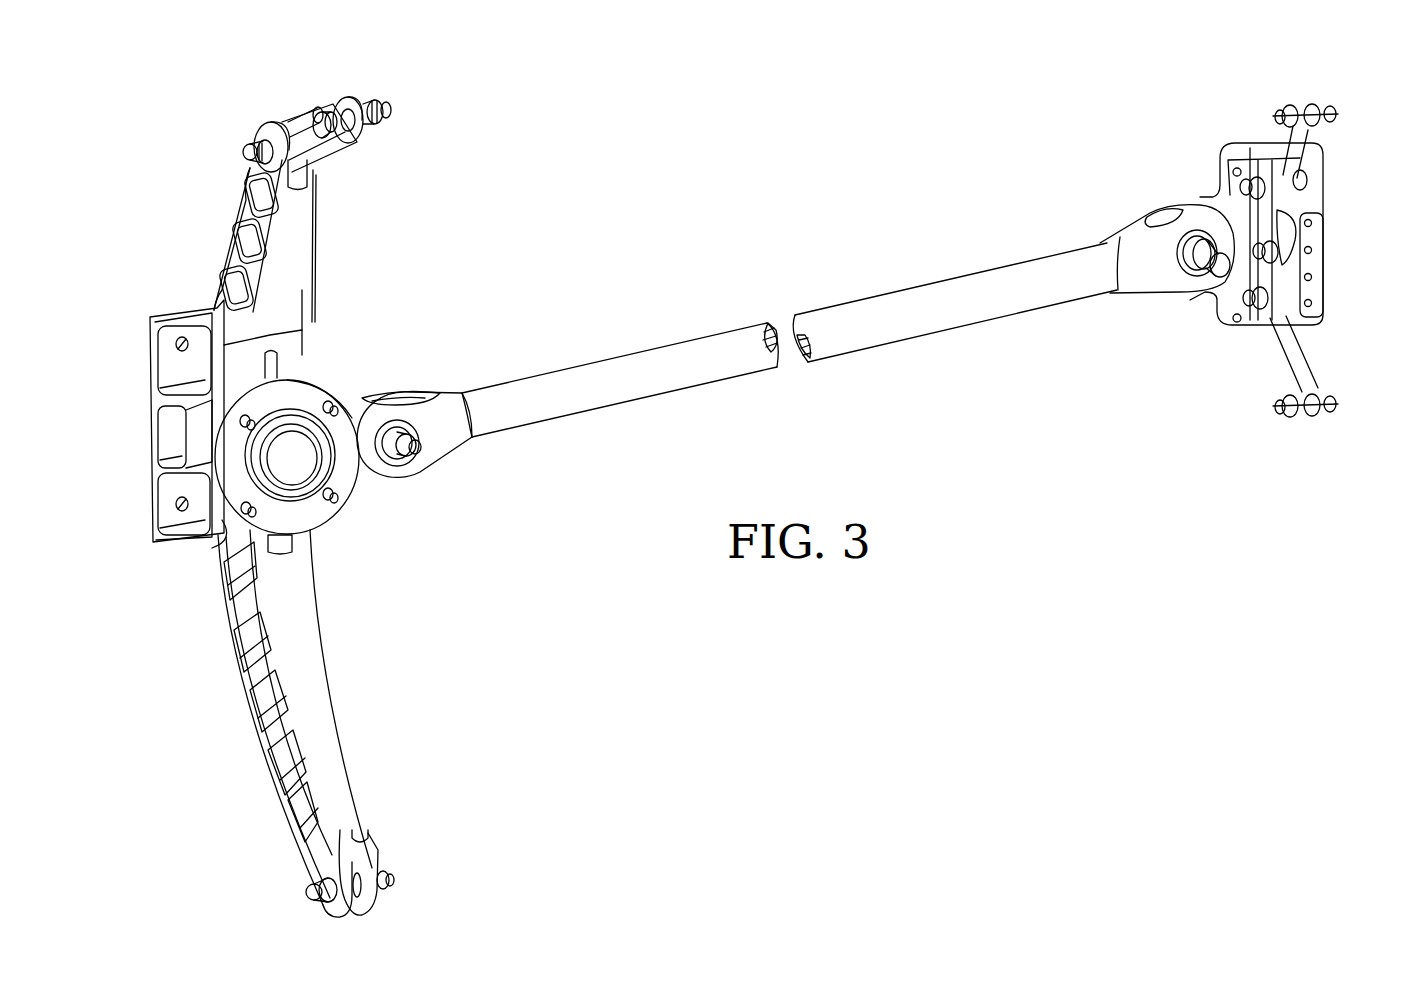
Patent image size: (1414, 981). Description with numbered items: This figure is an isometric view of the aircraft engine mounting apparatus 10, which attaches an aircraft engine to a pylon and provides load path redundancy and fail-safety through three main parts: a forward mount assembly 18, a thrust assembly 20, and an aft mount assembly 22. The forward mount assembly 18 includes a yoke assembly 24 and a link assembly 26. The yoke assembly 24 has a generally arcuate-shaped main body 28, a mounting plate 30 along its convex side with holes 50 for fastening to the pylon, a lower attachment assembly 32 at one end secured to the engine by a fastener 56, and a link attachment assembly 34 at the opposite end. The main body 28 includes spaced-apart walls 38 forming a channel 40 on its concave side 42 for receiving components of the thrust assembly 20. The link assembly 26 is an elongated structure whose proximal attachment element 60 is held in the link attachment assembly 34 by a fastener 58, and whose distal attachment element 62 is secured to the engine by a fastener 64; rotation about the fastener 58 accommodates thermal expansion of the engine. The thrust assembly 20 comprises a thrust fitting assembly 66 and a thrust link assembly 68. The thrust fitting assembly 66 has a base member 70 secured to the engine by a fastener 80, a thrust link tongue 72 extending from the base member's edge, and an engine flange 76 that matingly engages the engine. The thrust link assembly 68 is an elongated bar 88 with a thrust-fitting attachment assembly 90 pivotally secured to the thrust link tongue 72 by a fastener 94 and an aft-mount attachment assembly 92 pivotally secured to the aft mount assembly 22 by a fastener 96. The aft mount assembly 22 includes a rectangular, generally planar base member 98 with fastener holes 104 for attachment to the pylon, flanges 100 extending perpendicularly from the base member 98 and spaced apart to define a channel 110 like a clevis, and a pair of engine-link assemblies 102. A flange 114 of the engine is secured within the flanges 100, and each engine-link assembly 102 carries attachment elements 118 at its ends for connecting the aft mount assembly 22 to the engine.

The aircraft engine mounting apparatus 10 is at (120, 142).
The forward mount assembly 18 is at (164, 220).
The thrust assembly 20 is at (726, 187).
The aft mount assembly 22 is at (1170, 120).
The yoke assembly 24 is at (300, 622).
The link assembly 26 is at (327, 158).
The main body 28 is at (300, 572).
The mounting plate 30 is at (150, 484).
The lower attachment assembly 32 is at (362, 836).
The link attachment assembly 34 is at (258, 126).
The spaced-apart walls 38 is at (268, 365).
The channel 40 is at (300, 380).
The concave side 42 is at (300, 670).
The holes 50 is at (177, 346).
The fastener 56 is at (391, 880).
The fastener 58 is at (245, 152).
The proximal attachment element 60 is at (290, 122).
The distal attachment element 62 is at (340, 100).
The fastener 64 is at (391, 117).
The thrust fitting assembly 66 is at (345, 470).
The thrust link assembly 68 is at (700, 350).
The base member 70 is at (300, 392).
The thrust link tongue 72 is at (375, 400).
The engine flange 76 is at (312, 505).
The fastener 80 is at (215, 550).
The elongated bar 88 is at (655, 383).
The thrust-fitting attachment assembly 90 is at (455, 432).
The aft-mount attachment assembly 92 is at (1158, 295).
The fastener 94 is at (412, 453).
The fastener 96 is at (1178, 262).
The base member 98 is at (1232, 192).
The flanges 100 is at (1290, 198).
The engine-link assemblies 102 is at (1308, 150).
The fastener holes 104 is at (1250, 178).
The channel 110 is at (1292, 222).
The flange 114 is at (1308, 265).
The attachment elements 118 is at (1300, 116).